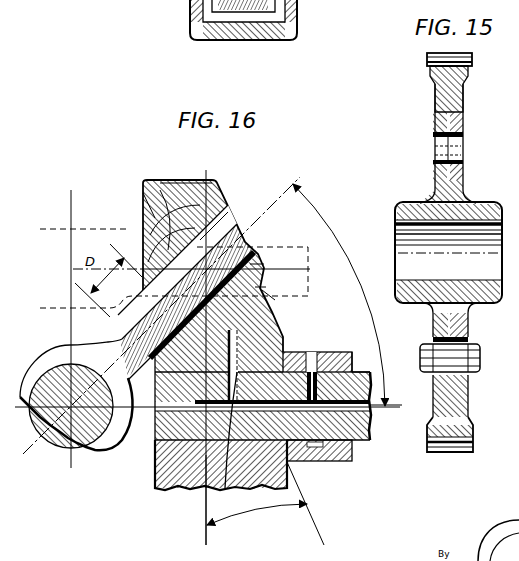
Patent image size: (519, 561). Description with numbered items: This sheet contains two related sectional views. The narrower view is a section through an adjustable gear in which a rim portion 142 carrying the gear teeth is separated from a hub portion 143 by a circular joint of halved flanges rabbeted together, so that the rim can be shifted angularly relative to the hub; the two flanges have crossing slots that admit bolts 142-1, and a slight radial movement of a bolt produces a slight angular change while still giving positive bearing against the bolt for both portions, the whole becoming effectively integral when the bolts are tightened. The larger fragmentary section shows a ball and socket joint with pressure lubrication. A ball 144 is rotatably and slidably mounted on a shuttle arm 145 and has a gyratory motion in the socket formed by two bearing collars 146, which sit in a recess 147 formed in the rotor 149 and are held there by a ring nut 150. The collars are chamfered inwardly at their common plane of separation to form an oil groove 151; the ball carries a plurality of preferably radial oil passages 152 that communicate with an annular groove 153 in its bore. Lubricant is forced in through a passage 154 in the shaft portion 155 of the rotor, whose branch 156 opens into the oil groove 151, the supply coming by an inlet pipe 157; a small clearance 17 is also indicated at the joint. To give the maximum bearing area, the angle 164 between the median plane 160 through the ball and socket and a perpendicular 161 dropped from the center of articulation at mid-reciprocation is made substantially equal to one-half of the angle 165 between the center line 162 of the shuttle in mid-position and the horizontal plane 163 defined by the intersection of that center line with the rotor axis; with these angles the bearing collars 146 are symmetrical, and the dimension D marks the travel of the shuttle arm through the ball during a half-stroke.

In FIG. 16, the gap / clearance 17 is at (140, 191).
In FIG. 15, the rim portion 142 is at (458, 402).
In FIG. 15, the bolts 142-1 is at (424, 354).
In FIG. 15, the hub portion 143 is at (470, 313).
In FIG. 16, the ball 144 is at (262, 286).
In FIG. 16, the shuttle arm 145 is at (108, 342).
In FIG. 16, the bearing collars 146 is at (138, 243).
In FIG. 16, the recess 147 is at (147, 166).
In FIG. 16, the rotor 149 is at (150, 499).
In FIG. 16, the ring nut 150 is at (217, 184).
In FIG. 16, the oil groove 151 is at (150, 237).
In FIG. 16, the oil passages 152 is at (274, 294).
In FIG. 16, the annular groove 153 is at (258, 262).
In FIG. 16, the passage 154 is at (280, 396).
In FIG. 16, the shaft portion 155 is at (153, 423).
In FIG. 16, the branch 156 is at (228, 383).
In FIG. 16, the inlet pipe 157 is at (310, 352).
In FIG. 16, the median plane 160 is at (290, 465).
In FIG. 16, the perpendicular 161 is at (205, 537).
In FIG. 16, the center line 162 is at (298, 186).
In FIG. 16, the horizontal plane 163 is at (393, 397).
In FIG. 16, the angle 164 is at (247, 518).
In FIG. 16, the angle 165 is at (358, 278).